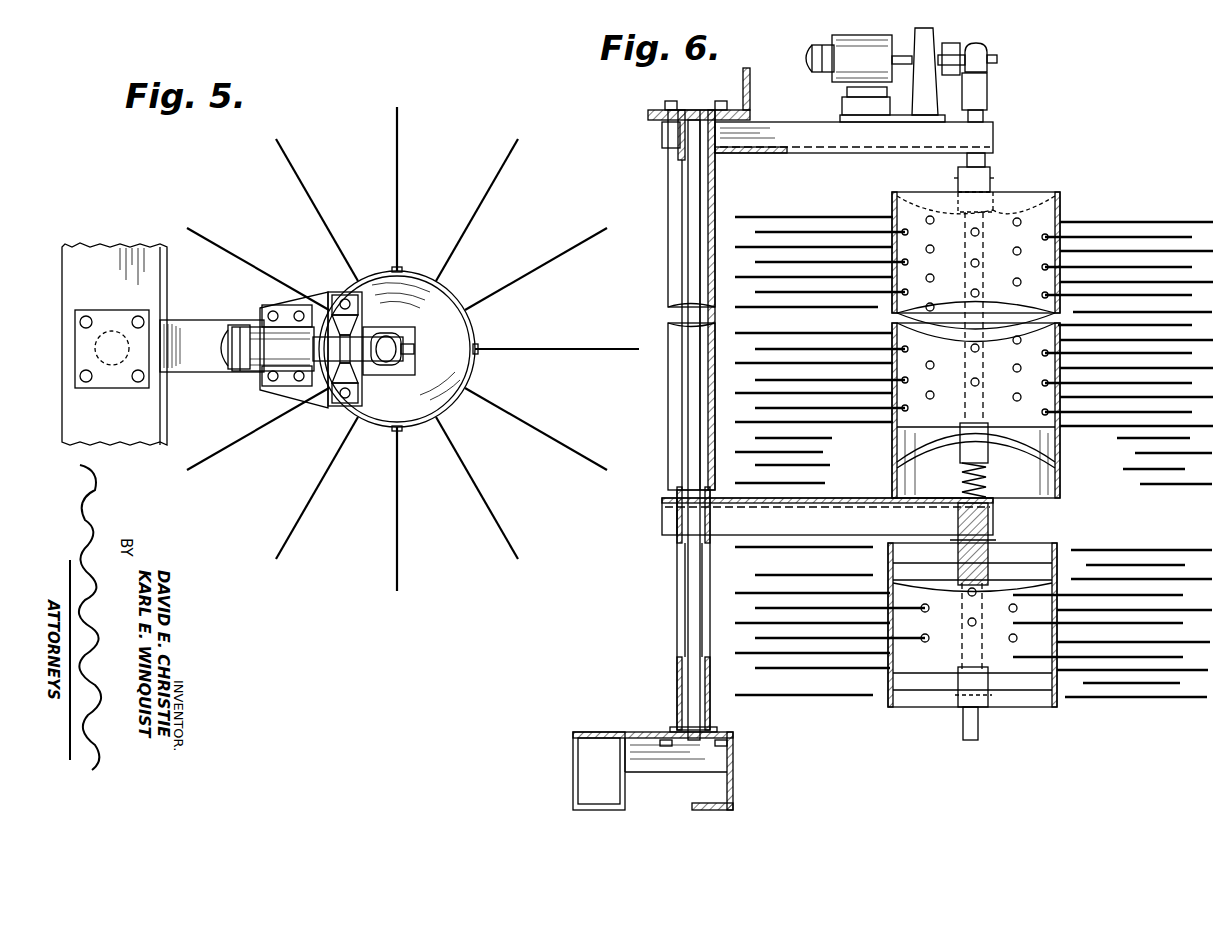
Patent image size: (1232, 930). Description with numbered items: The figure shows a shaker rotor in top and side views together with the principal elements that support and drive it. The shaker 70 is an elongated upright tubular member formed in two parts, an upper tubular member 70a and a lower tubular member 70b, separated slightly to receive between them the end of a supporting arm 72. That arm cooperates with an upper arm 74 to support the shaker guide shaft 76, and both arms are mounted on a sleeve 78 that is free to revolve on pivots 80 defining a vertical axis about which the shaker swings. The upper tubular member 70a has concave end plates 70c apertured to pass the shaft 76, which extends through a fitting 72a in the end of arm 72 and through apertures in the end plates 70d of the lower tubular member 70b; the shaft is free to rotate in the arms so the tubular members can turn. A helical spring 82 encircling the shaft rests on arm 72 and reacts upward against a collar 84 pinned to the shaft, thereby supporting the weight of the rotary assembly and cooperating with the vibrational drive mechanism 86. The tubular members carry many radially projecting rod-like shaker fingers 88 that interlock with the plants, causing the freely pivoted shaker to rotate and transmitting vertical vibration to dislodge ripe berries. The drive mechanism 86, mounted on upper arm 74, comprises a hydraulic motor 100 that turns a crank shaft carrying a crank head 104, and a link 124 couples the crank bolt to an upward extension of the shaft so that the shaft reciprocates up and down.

In FIG. 5, the shaker 70 is at (460, 152).
In FIG. 6, the shaker 70 is at (1078, 191).
In FIG. 5, the upper tubular member 70a is at (460, 296).
In FIG. 6, the upper tubular member 70a is at (1058, 478).
In FIG. 6, the lower tubular member 70b is at (1058, 547).
In FIG. 6, the concave end plates 70c is at (1027, 200).
In FIG. 6, the end plates 70d is at (1017, 560).
In FIG. 6, the supporting arm 72 is at (828, 498).
In FIG. 6, the fitting 72a is at (990, 536).
In FIG. 5, the upper arm 74 is at (207, 322).
In FIG. 6, the upper arm 74 is at (833, 147).
In FIG. 6, the shaker guide shaft 76 is at (993, 210).
In FIG. 6, the sleeve 78 is at (712, 173).
In FIG. 6, the pivots 80 is at (698, 143).
In FIG. 6, the helical spring 82 is at (958, 480).
In FIG. 6, the collar 84 is at (895, 462).
In FIG. 6, the vibrational drive mechanism 86 is at (1002, 49).
In FIG. 5, the shaker fingers 88 is at (300, 178).
In FIG. 6, the shaker fingers 88 is at (1160, 251).
In FIG. 5, the hydraulic motor 100 is at (271, 349).
In FIG. 6, the hydraulic motor 100 is at (847, 34).
In FIG. 5, the crank head 104 is at (375, 341).
In FIG. 6, the crank head 104 is at (950, 43).
In FIG. 5, the link 124 is at (397, 351).
In FIG. 6, the link 124 is at (990, 88).